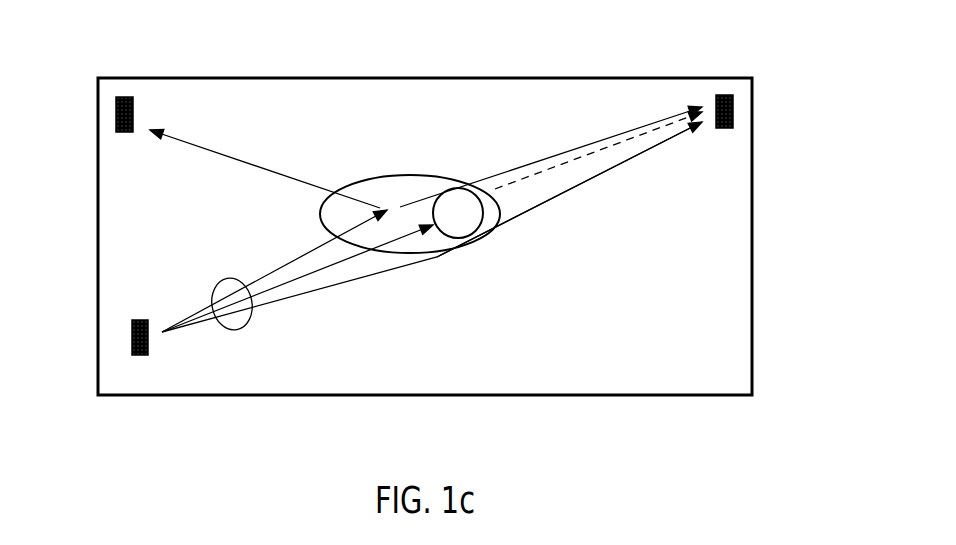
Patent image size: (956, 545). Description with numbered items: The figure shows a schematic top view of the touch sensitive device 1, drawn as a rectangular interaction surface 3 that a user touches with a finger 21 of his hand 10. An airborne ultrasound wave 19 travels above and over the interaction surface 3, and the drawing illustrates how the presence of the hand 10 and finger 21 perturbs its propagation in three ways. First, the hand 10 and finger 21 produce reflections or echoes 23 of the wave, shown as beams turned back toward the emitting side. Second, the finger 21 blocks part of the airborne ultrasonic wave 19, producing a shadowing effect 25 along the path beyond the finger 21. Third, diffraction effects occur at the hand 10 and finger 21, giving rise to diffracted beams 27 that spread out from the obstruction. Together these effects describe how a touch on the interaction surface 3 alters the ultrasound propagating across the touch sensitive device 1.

The touch sensitive device 1 is at (318, 428).
The interaction surface 3 is at (722, 380).
The hand 10 is at (387, 183).
The airborne ultrasound wave 19 is at (238, 330).
The finger 21 is at (446, 237).
The reflections/echoes 23 is at (228, 153).
The shadowing effect 25 is at (552, 168).
The diffracted beams 27 is at (540, 206).